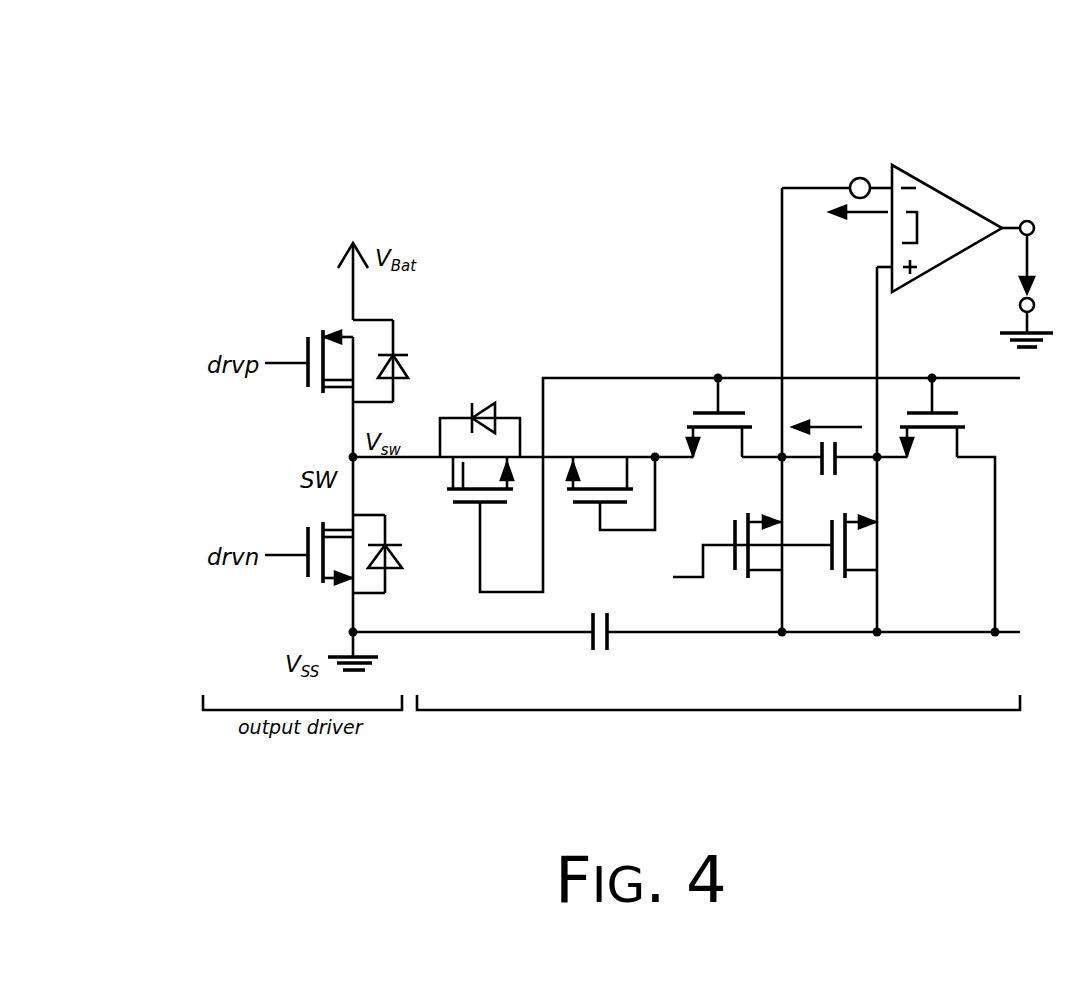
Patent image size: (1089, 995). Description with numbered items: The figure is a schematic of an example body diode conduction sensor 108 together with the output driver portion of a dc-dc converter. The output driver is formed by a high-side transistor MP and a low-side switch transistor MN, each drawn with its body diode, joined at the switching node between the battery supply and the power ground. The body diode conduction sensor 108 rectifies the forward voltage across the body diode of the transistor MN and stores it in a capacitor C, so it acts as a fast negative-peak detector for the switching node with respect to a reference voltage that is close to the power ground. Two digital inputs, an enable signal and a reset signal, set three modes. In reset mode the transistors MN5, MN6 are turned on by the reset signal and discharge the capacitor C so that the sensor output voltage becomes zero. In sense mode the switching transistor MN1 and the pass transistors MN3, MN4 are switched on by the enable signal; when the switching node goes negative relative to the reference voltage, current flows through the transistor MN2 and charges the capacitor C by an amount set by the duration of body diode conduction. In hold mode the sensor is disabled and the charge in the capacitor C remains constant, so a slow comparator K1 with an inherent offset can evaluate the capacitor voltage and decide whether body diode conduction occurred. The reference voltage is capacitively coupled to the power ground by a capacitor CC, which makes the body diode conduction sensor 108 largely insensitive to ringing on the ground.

The body diode conduction sensor 108 is at (745, 389).
The output driver PMOS transistor MP is at (309, 378).
The output driver NMOS transistor MN is at (309, 569).
The switching transistor MN1 is at (470, 442).
The transistor MN2 is at (611, 476).
The pass transistor MN3 is at (719, 436).
The pass transistor MN4 is at (932, 436).
The reset transistor MN5 is at (883, 567).
The reset transistor MN6 is at (786, 567).
The capacitor C is at (814, 469).
The capacitor CC is at (584, 648).
The comparator K1 is at (947, 228).